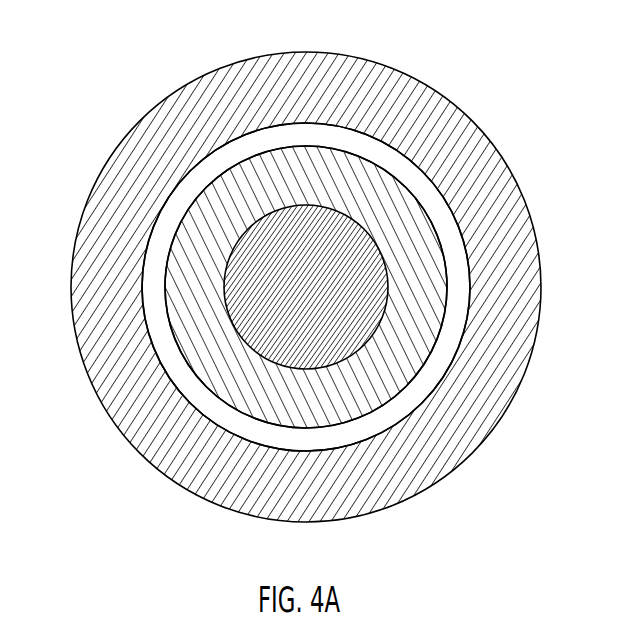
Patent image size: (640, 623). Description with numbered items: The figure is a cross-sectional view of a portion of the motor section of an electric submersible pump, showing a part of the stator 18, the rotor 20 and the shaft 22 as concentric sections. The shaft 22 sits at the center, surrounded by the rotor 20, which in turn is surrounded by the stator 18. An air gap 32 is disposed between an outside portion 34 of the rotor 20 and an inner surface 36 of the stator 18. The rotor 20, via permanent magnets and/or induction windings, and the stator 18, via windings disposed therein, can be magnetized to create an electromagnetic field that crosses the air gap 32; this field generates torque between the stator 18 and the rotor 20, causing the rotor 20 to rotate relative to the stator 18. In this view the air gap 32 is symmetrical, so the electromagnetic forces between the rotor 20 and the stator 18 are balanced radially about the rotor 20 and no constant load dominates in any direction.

The stator 18 is at (527, 217).
The rotor 20 is at (177, 230).
The shaft 22 is at (262, 178).
The air gap 32 is at (372, 148).
The outside portion of the rotor 34 is at (167, 293).
The inner surface of the stator 36 is at (464, 280).